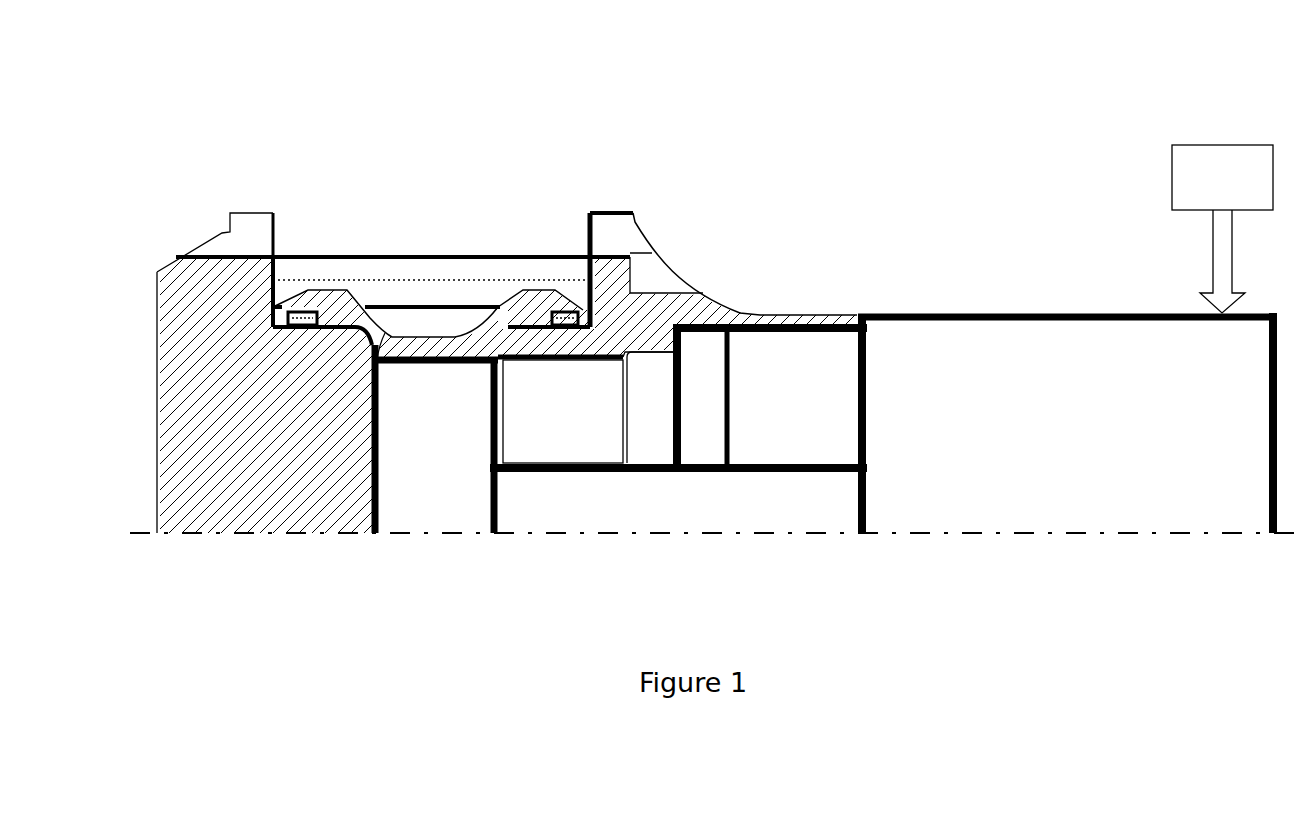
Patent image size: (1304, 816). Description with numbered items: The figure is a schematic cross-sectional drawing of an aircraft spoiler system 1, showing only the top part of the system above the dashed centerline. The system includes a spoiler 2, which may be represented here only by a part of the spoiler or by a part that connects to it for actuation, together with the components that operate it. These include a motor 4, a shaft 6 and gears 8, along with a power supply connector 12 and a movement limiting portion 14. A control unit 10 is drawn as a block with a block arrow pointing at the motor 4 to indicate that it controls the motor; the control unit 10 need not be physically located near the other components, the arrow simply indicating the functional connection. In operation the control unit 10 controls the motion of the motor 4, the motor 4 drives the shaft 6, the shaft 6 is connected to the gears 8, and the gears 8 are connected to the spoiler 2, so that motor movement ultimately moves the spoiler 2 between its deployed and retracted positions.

The aircraft spoiler system 1 is at (995, 134).
The spoiler 2 is at (410, 270).
The motor 4 is at (1080, 385).
The shaft 6 is at (742, 500).
The gears 8 is at (440, 497).
The control unit 10 is at (1207, 194).
The power supply connector 12 is at (695, 380).
The movement limiting portion 14 is at (784, 372).